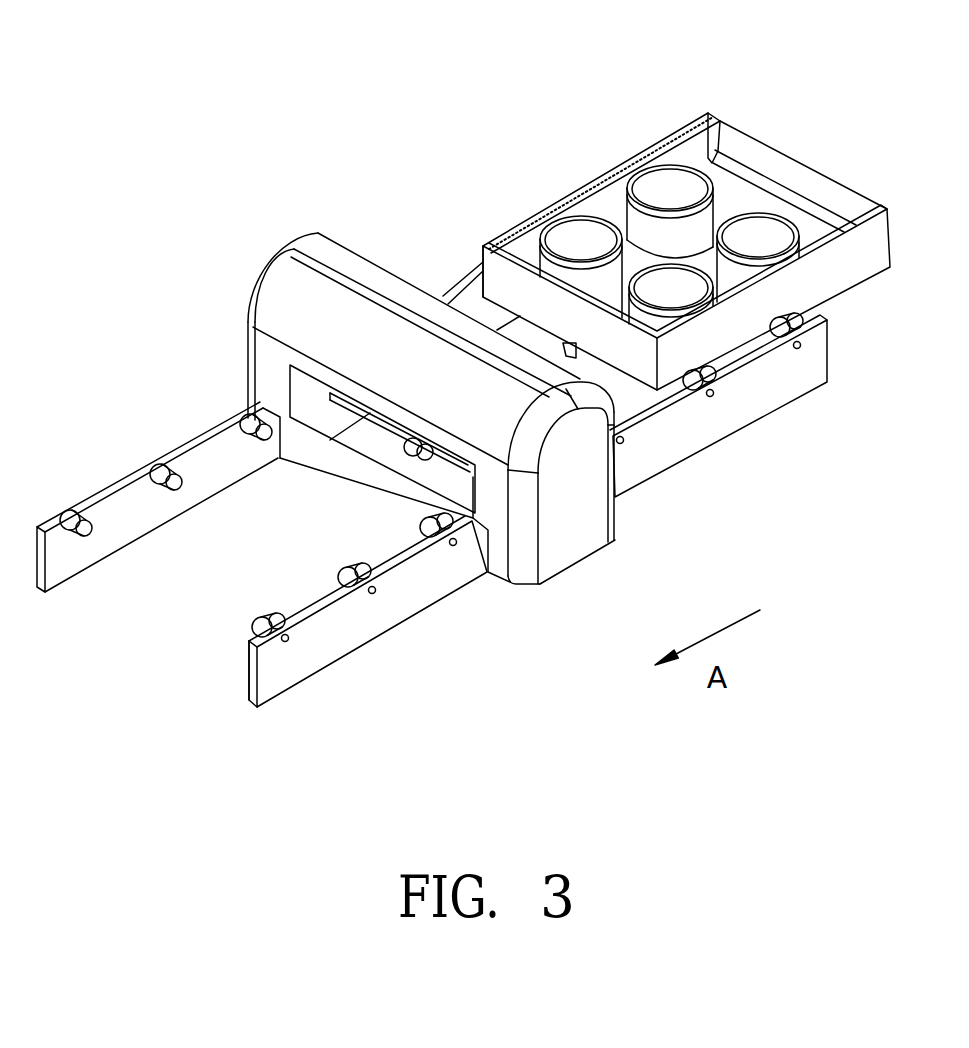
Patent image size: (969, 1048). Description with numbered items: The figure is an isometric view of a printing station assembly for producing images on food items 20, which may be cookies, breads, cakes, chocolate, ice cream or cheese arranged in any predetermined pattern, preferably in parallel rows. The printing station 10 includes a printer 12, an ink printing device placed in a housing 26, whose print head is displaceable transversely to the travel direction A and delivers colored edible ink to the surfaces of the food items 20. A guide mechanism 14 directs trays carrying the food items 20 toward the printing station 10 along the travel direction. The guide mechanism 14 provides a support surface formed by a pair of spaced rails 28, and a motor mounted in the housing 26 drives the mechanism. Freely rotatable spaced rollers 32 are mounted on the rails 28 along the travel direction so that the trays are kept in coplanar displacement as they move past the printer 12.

The printing station 10 is at (325, 120).
The printer 12 is at (298, 307).
The guide mechanism 14 is at (318, 693).
The food items 20 is at (667, 187).
The housing 26 is at (563, 533).
The rails 28 is at (130, 513).
The rollers 32 is at (250, 443).